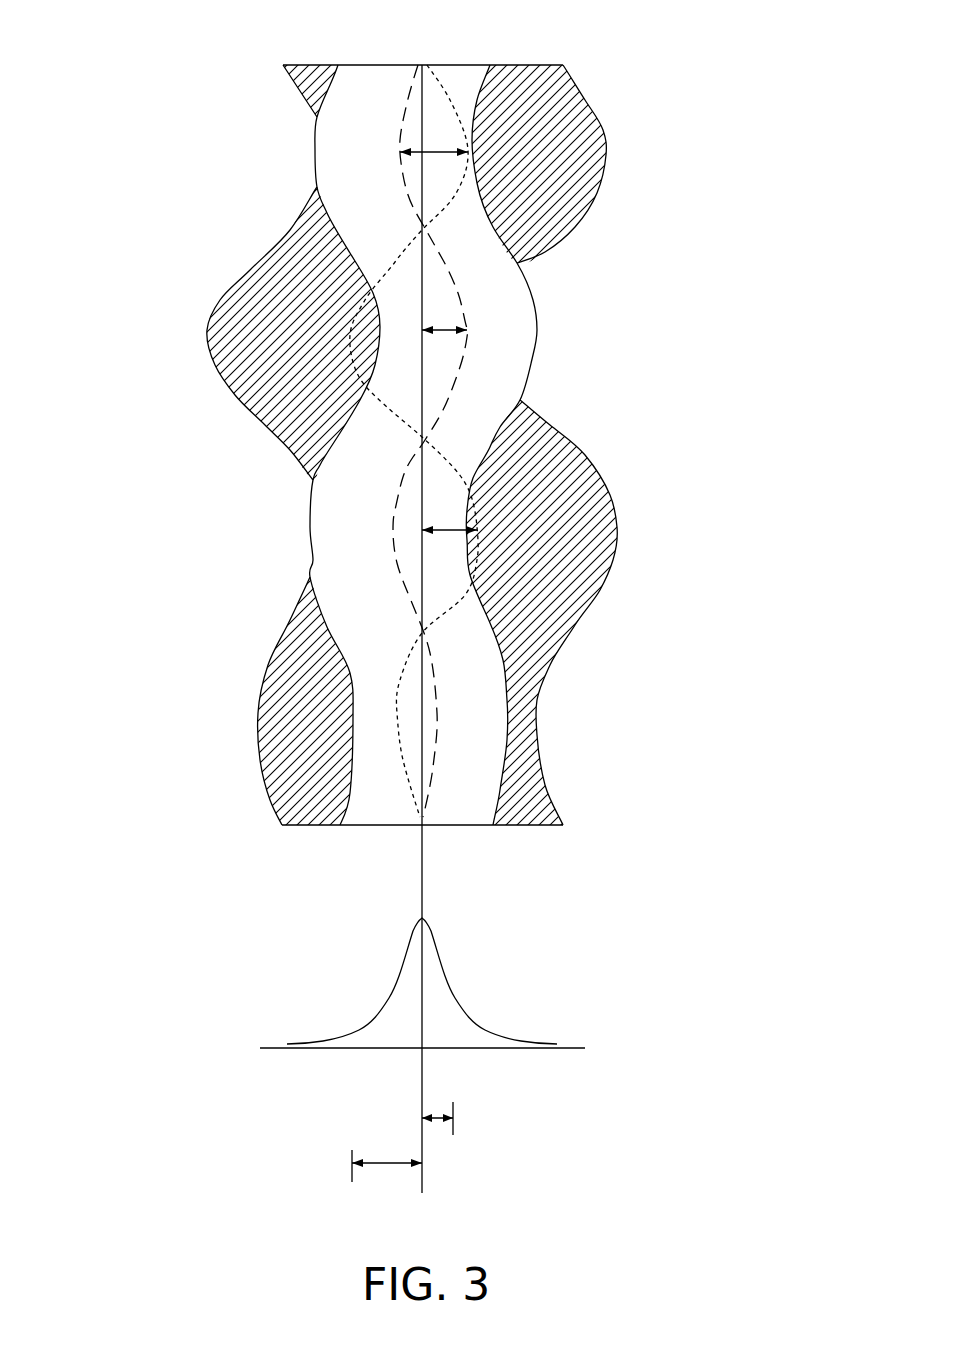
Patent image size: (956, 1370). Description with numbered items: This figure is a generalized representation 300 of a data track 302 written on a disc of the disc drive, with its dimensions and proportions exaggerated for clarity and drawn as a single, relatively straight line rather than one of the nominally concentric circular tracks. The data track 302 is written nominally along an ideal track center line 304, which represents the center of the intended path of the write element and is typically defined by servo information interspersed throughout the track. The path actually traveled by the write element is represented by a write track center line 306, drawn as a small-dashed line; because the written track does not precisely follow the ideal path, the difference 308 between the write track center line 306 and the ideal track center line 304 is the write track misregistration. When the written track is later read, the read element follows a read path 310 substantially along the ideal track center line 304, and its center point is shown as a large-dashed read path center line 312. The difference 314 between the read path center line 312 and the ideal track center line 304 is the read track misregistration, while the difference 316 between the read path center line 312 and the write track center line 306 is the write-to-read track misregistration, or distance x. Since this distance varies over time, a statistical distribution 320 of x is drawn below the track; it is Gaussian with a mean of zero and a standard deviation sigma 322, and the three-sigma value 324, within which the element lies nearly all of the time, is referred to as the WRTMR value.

The generalized representation 300 is at (163, 82).
The data track 302 is at (550, 139).
The ideal track center line 304 is at (422, 858).
The write track center line 306 is at (403, 247).
The difference between write track center line and ideal track center line 308 is at (463, 535).
The read path 310 is at (490, 387).
The read path center line 312 is at (393, 527).
The difference between read path center line and ideal track center line 314 is at (445, 327).
The difference between read path center line and write track center line 316 is at (437, 147).
The statistical distribution 320 is at (310, 950).
The standard deviation σ 322 is at (433, 1117).
The 3σ value 324 is at (390, 1163).